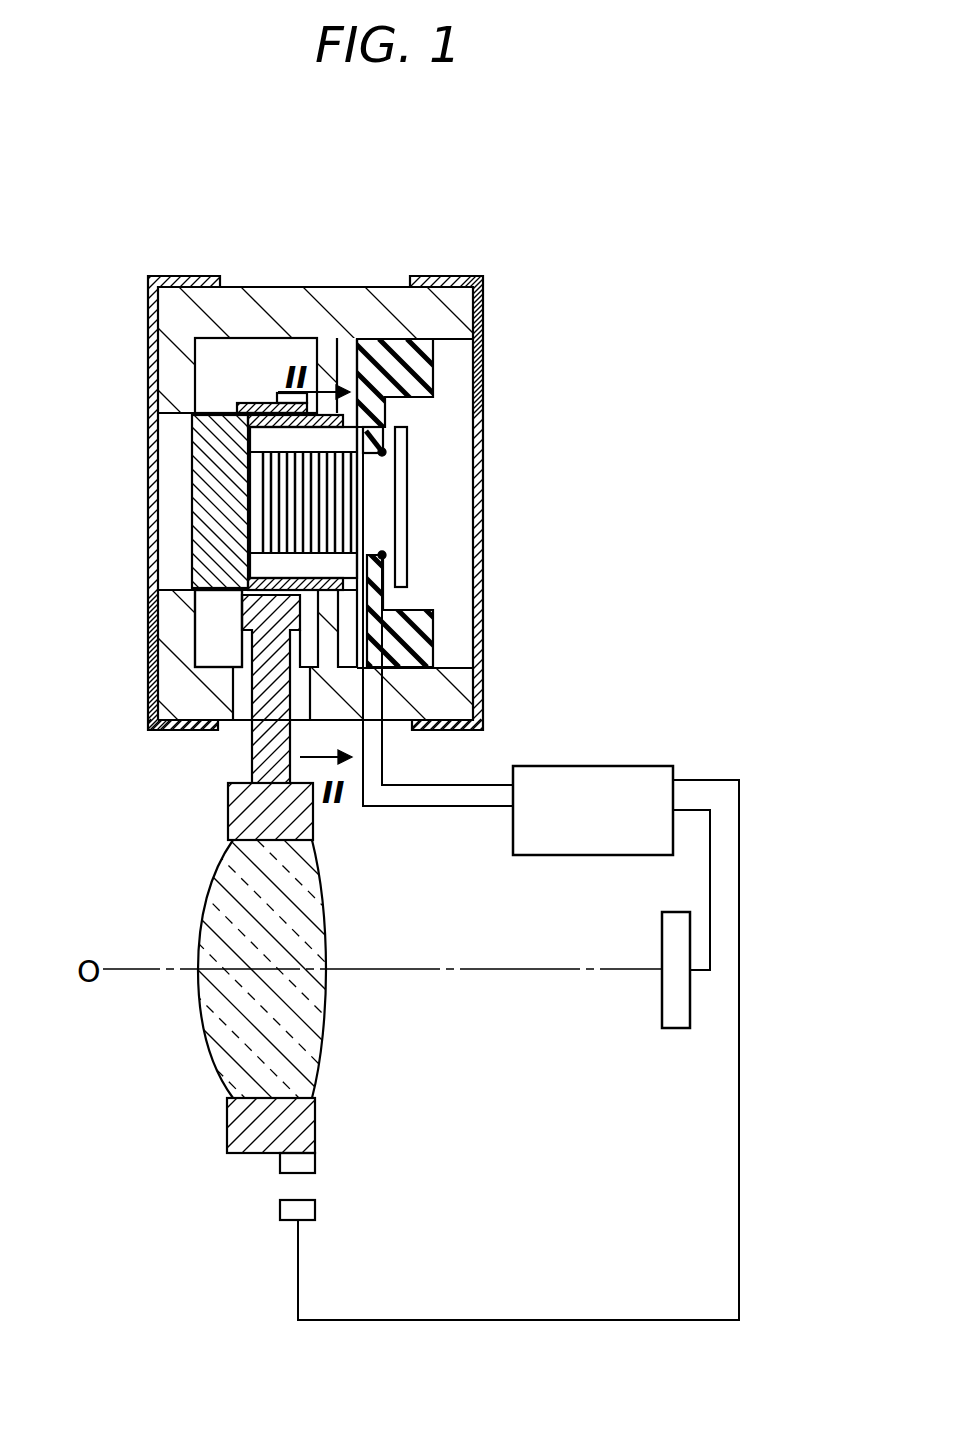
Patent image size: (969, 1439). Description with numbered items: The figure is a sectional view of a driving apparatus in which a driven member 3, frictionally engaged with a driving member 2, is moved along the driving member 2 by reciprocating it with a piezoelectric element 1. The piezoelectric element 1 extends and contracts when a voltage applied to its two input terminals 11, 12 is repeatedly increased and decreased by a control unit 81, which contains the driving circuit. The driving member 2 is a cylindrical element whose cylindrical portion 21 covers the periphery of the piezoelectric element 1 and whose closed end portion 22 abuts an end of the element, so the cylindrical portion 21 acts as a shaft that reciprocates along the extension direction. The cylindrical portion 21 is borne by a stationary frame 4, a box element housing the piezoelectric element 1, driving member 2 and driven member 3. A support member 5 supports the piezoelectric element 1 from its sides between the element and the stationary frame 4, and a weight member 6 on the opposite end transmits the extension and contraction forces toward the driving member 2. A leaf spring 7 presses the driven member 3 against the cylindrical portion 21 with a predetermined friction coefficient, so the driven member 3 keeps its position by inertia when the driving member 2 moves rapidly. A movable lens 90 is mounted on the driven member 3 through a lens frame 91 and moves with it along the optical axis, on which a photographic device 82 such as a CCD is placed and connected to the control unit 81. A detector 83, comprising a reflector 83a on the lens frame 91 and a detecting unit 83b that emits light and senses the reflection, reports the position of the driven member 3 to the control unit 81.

The piezoelectric element 1 is at (262, 522).
The driving member 2 is at (192, 440).
The driven member 3 is at (195, 594).
The stationary frame 4 is at (173, 298).
The support member 5 is at (382, 345).
The weight member 6 is at (408, 497).
The leaf spring 7 is at (240, 408).
The input terminal 11 is at (382, 452).
The input terminal 12 is at (382, 555).
The cylindrical portion 21 is at (243, 606).
The end portion 22 is at (260, 412).
The control unit 81 is at (598, 766).
The photographic device 82 is at (680, 1030).
The detector 83 is at (418, 1148).
The reflector 83a is at (318, 1162).
The detecting unit 83b is at (318, 1208).
The movable lens 90 is at (217, 868).
The lens frame 91 is at (228, 816).